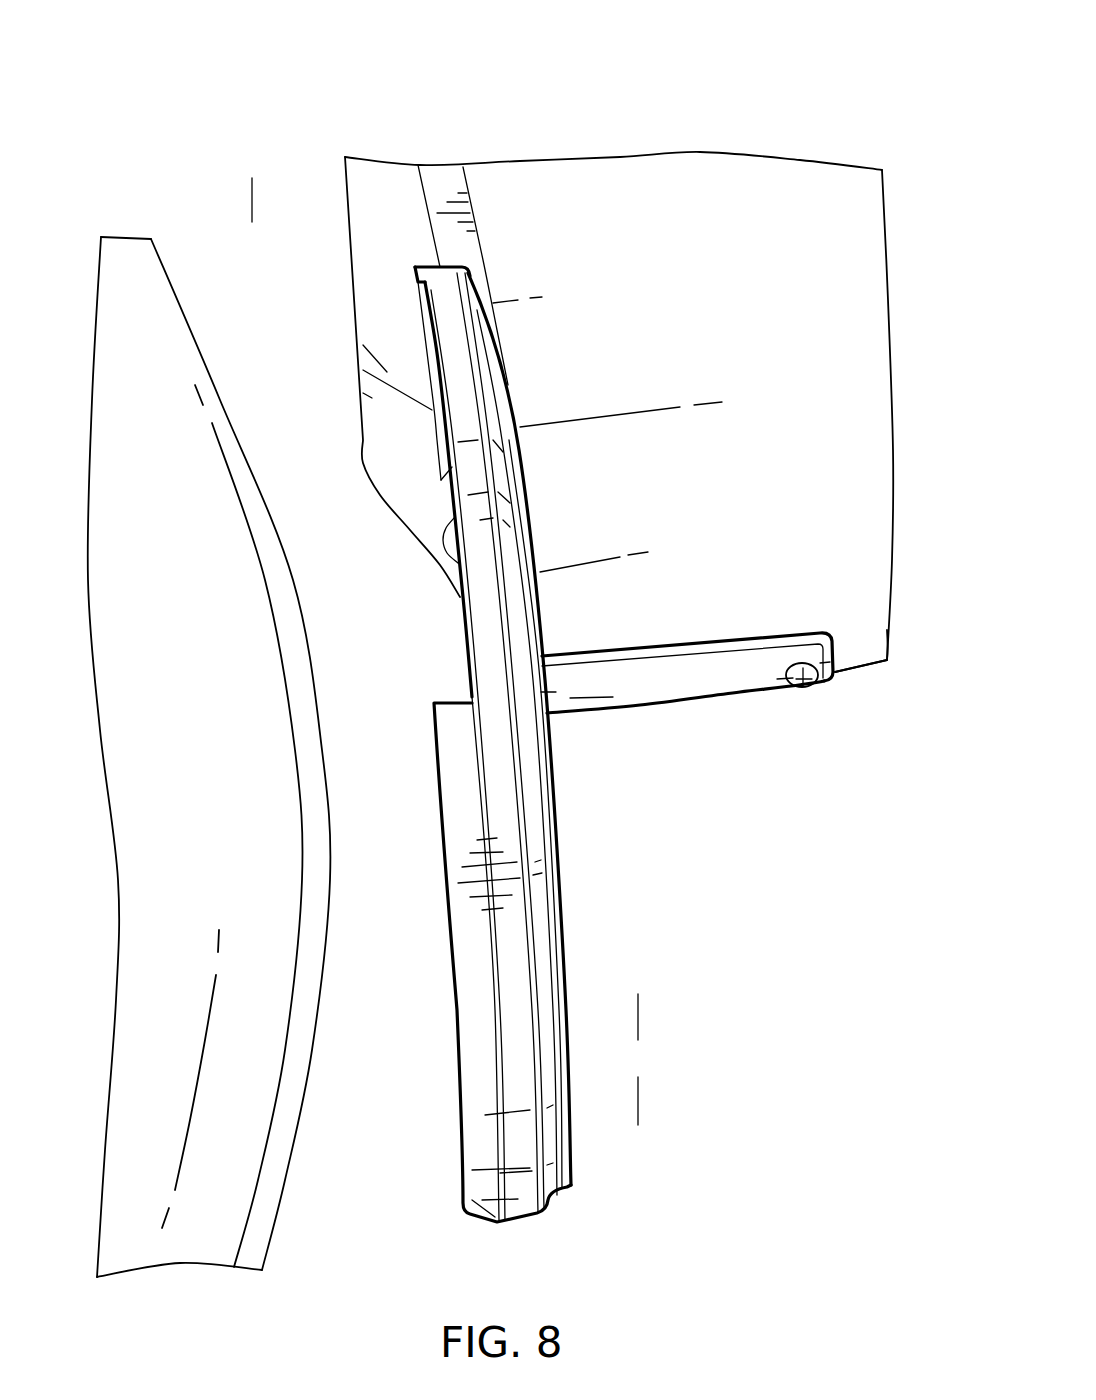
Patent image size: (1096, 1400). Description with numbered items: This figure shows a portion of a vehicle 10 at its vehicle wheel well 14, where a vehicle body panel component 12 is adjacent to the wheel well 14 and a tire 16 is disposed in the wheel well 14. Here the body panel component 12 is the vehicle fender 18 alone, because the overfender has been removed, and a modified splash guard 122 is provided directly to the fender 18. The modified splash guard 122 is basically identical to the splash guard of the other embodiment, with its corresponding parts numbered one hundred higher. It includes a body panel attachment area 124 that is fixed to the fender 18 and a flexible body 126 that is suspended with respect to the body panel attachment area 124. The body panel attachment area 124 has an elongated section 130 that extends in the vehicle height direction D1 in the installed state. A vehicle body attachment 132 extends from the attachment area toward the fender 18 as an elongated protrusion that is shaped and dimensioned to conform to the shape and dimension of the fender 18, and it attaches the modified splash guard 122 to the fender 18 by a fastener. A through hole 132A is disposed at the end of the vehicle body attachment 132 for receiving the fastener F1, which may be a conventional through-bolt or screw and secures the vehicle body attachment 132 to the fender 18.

The vehicle 10 is at (808, 42).
The vehicle body panel component 12 is at (770, 115).
The vehicle wheel well 14 is at (252, 222).
The tire 16 is at (95, 273).
The vehicle fender 18 is at (862, 673).
The modified splash guard 122 is at (685, 888).
The body panel attachment area 124 is at (480, 287).
The flexible body 126 is at (460, 1085).
The elongated section 130 is at (453, 470).
The vehicle body attachment 132 is at (657, 704).
The through hole 132A is at (793, 665).
The fastener F1 is at (808, 688).
The vehicle height direction D1 is at (638, 994).